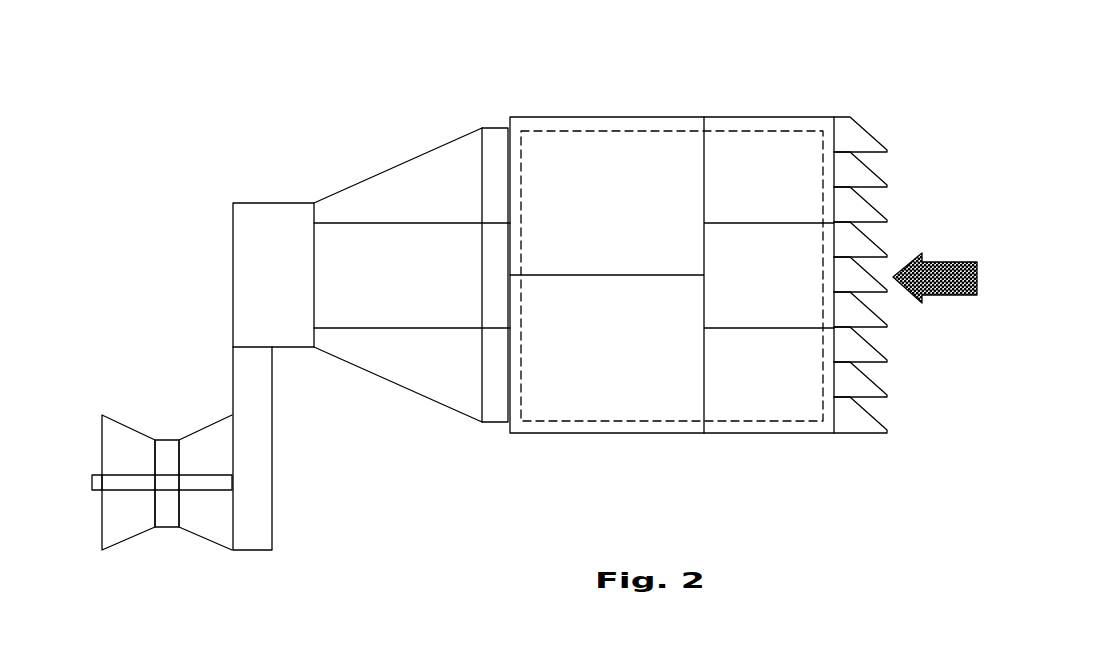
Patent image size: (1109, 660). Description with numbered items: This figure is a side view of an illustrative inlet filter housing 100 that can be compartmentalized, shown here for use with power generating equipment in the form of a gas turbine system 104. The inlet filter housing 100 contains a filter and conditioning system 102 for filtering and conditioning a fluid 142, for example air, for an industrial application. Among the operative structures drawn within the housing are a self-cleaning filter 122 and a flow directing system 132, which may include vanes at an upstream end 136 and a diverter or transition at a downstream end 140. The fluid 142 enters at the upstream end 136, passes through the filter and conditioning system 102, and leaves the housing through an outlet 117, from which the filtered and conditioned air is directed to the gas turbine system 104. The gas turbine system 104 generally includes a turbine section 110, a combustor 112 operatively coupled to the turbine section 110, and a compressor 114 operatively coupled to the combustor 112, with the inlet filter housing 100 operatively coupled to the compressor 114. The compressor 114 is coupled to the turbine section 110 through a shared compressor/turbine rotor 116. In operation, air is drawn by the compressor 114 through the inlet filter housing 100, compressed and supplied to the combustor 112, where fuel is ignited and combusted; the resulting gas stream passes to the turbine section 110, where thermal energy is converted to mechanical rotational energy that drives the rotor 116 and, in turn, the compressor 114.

The inlet filter housing 100 is at (230, 104).
The filter and conditioning system 102 is at (743, 113).
The gas turbine system 104 is at (230, 397).
The turbine section 110 is at (125, 543).
The combustor 112 is at (165, 527).
The compressor 114 is at (207, 543).
The shared compressor/turbine rotor 116 is at (92, 493).
The outlet 117 is at (257, 371).
The self-cleaning filter 122 is at (587, 100).
The flow directing system 132 is at (358, 183).
The downstream end 140 is at (358, 183).
The upstream end 136 is at (890, 203).
The fluid 142 is at (944, 285).